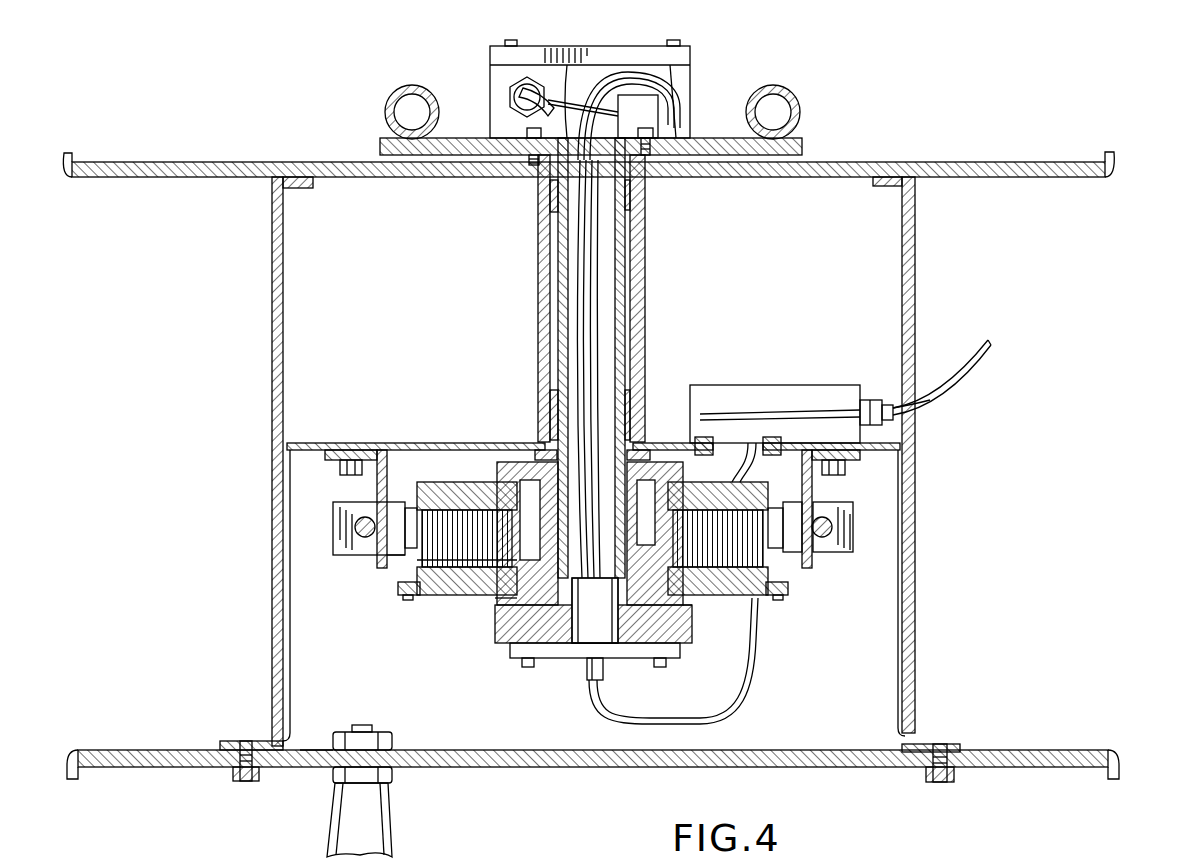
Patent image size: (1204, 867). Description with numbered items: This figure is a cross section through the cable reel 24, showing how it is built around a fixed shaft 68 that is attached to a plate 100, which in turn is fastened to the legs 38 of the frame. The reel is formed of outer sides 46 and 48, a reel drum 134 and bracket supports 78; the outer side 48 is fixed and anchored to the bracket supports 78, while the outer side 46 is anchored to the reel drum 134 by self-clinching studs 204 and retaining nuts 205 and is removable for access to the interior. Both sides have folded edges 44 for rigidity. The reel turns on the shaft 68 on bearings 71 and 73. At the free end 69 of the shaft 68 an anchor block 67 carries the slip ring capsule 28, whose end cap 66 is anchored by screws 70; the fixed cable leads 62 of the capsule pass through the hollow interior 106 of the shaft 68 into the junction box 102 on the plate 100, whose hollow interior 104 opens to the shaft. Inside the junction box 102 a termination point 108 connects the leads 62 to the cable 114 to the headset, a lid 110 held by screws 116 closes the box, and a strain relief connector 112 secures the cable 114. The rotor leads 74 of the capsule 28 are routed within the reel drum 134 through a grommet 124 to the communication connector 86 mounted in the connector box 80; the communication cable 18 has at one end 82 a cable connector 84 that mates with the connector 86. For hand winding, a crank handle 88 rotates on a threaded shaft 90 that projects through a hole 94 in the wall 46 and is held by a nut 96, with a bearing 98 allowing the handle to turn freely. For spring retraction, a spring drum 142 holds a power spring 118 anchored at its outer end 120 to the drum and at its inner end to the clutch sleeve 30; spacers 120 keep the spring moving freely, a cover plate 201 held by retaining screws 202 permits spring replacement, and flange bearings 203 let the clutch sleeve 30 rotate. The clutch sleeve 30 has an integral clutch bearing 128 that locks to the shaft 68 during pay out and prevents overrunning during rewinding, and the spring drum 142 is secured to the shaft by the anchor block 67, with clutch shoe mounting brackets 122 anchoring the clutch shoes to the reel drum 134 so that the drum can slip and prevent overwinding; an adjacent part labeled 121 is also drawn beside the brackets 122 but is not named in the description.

The communication cable 18 is at (975, 352).
The cable reel 24 is at (940, 465).
The slip ring capsule 28 is at (586, 632).
The clutch sleeve 30 is at (677, 625).
The legs 38 is at (388, 113).
The folded edges 44 is at (1110, 176).
The outer side 46 is at (560, 767).
The outer side 48 is at (918, 162).
The cable leads 62 is at (586, 292).
The end cap 66 is at (556, 658).
The anchor block 67 is at (690, 612).
The fixed shaft 68 is at (556, 310).
The free end 69 is at (526, 666).
The screws 70 is at (656, 667).
The bearing 71 is at (545, 195).
The bearing 73 is at (548, 395).
The rotor leads 74 is at (735, 695).
The bracket supports 78 is at (283, 318).
The connector box 80 is at (782, 385).
The one end 82 is at (908, 412).
The cable connector 84 is at (887, 404).
The communication connector 86 is at (866, 400).
The crank handle 88 is at (385, 827).
The threaded shaft 90 is at (368, 726).
The hole 94 is at (330, 762).
The nut 96 is at (336, 732).
The bearing 98 is at (392, 778).
The plate 100 is at (790, 150).
The junction box 102 is at (662, 96).
The hollow interior 104 is at (655, 84).
The hollow interior 106 is at (612, 250).
The internal termination point 108 is at (640, 108).
The lid 110 is at (680, 50).
The strain relief connector 112 is at (523, 88).
The cable 114 is at (515, 100).
The screws 116 is at (507, 42).
The power spring 118 is at (470, 555).
The spacers 120 is at (462, 482).
The block face 121 is at (418, 540).
The clutch shoe mounting brackets 122 is at (384, 450).
The grommet 124 is at (866, 522).
The clutch bearing 128 is at (540, 452).
The reel drum 134 is at (333, 443).
The spring drum 142 is at (420, 570).
The cover plate 201 is at (492, 600).
The retaining screws 202 is at (440, 592).
The flange bearings 203 is at (497, 622).
The self-clinching studs 204 is at (240, 744).
The retaining nuts 205 is at (233, 775).